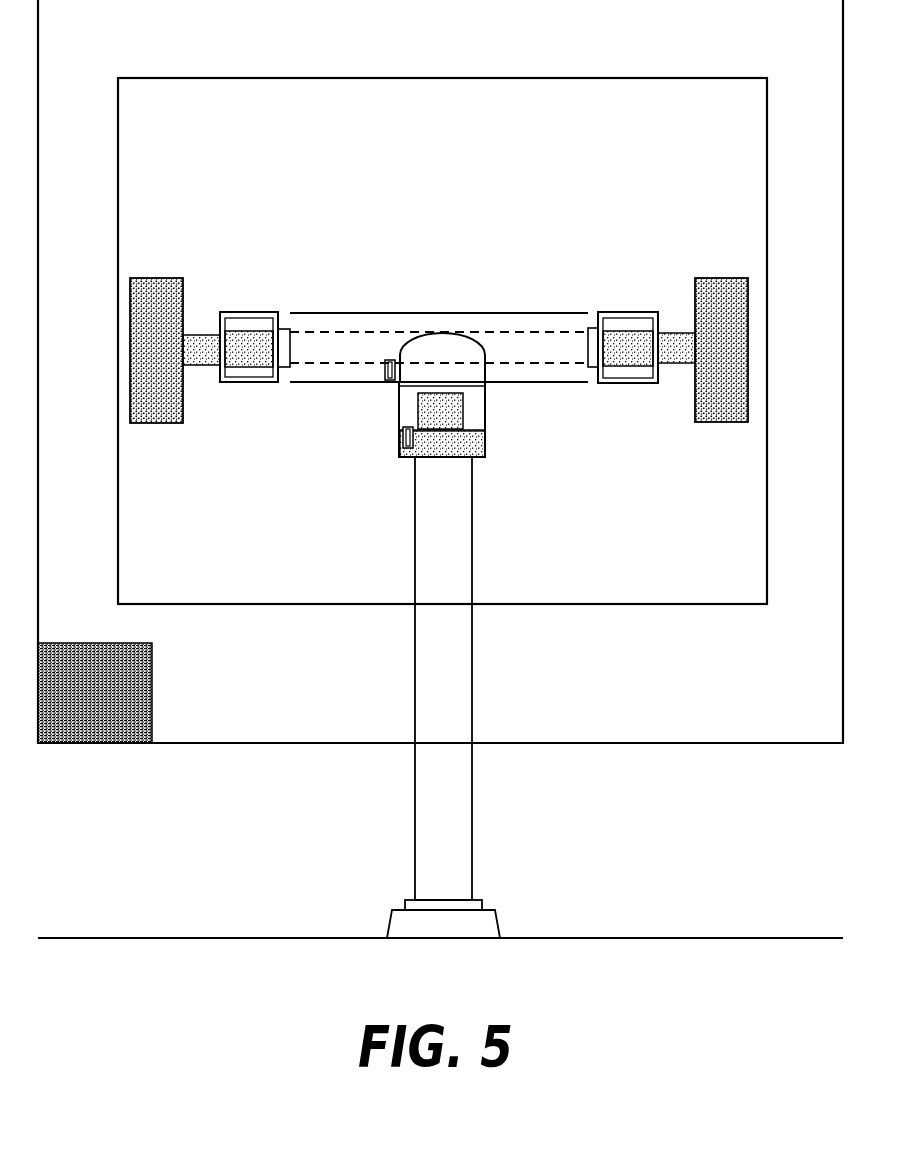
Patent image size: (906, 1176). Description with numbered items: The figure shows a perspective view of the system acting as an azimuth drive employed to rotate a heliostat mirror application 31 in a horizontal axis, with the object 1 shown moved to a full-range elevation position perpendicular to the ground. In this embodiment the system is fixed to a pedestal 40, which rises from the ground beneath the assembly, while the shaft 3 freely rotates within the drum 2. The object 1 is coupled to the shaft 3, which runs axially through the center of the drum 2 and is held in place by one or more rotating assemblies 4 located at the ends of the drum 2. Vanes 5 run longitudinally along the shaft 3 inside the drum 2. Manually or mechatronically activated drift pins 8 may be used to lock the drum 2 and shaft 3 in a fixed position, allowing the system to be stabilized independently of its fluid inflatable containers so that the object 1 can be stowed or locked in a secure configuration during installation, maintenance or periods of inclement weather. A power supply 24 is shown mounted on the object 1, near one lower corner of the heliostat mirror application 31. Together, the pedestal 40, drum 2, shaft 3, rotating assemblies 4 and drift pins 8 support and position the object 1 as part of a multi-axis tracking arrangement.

The object 1 is at (332, 576).
The drum 2 is at (493, 312).
The shaft 3 is at (555, 337).
The rotating assembly 4 is at (280, 383).
The vane 5 is at (265, 335).
The drift pin 8 is at (386, 377).
The power supply 24 is at (108, 745).
The heliostat mirror application 31 is at (225, 314).
The pedestal 40 is at (440, 855).